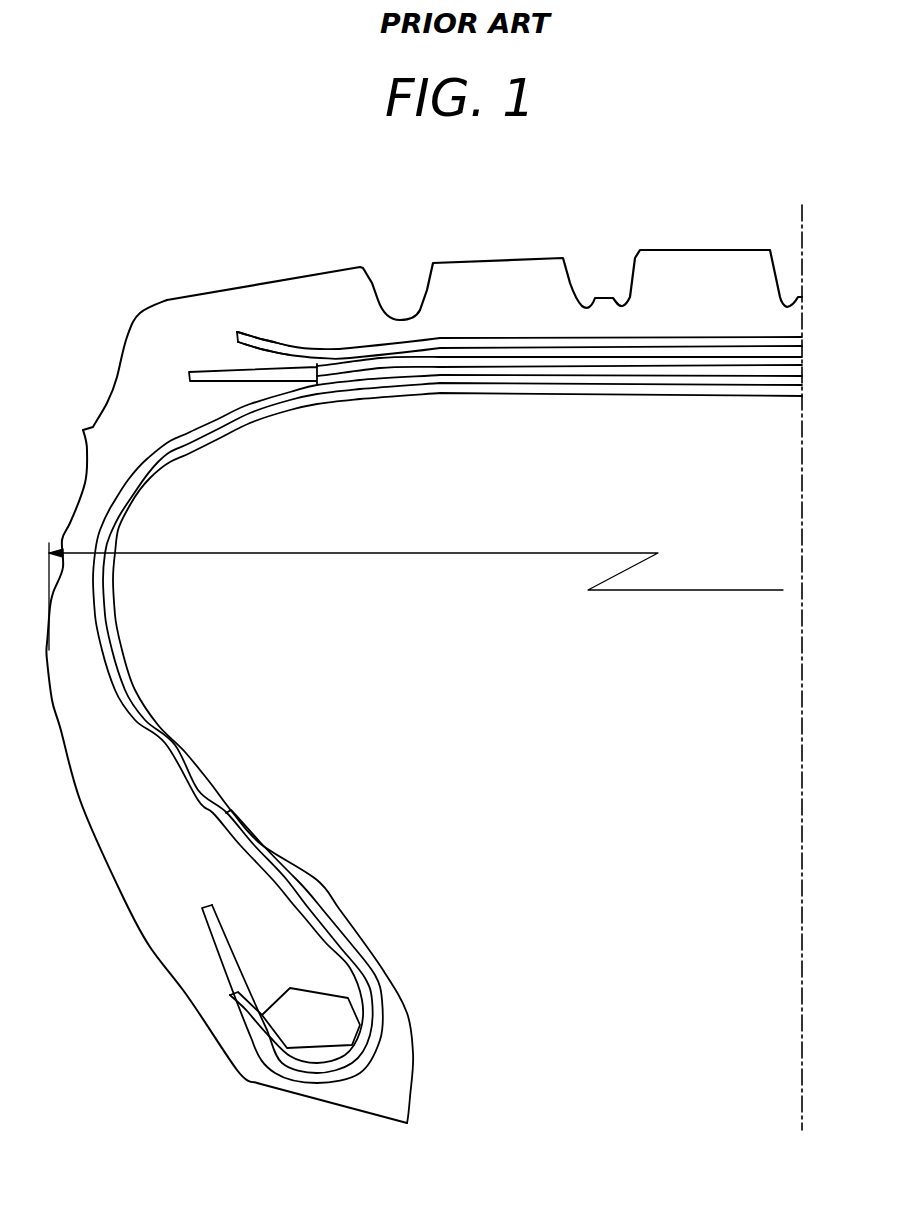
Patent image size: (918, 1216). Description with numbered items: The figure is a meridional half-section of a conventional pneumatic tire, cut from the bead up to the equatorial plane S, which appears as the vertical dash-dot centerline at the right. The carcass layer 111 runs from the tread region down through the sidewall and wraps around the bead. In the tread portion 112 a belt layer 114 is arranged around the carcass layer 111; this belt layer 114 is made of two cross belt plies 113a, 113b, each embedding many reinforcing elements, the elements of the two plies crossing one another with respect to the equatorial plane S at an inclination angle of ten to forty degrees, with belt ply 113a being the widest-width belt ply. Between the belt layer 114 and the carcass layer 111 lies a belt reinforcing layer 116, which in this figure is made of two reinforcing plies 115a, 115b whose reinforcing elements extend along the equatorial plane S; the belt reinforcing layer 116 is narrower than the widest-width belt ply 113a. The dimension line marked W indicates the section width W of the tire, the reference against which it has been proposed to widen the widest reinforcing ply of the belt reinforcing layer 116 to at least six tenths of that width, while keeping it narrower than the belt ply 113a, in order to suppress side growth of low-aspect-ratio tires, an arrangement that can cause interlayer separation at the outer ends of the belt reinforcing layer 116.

The carcass layer 111 is at (164, 743).
The tread portion 112 is at (478, 260).
The cross belt ply 113a is at (338, 362).
The cross belt ply 113b is at (270, 343).
The belt layer 114 is at (510, 338).
The reinforcing ply 115a is at (477, 372).
The reinforcing ply 115b is at (543, 360).
The belt reinforcing layer 116 is at (690, 375).
The equatorial plane S is at (803, 258).
The section width W is at (416, 585).